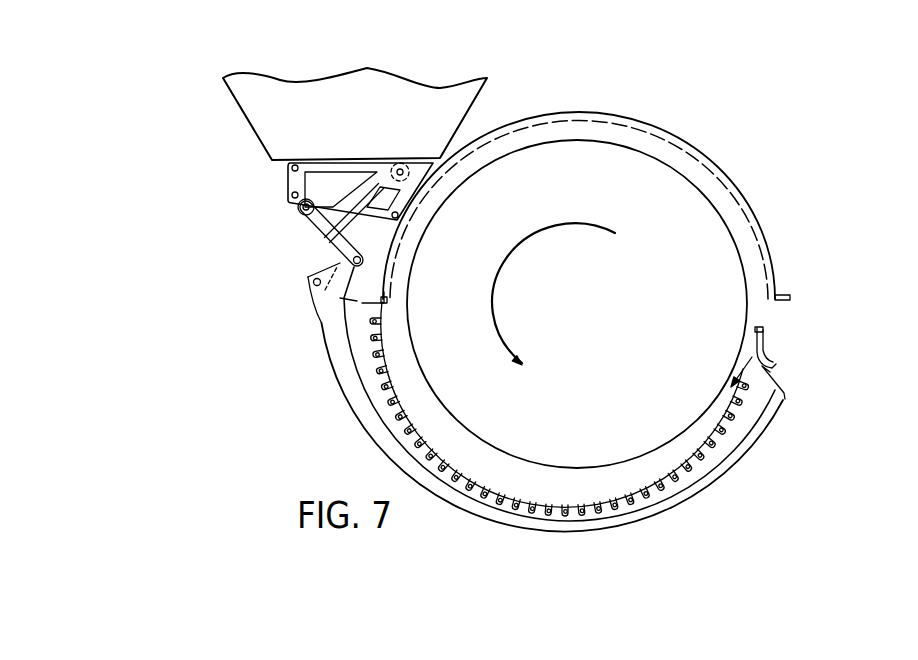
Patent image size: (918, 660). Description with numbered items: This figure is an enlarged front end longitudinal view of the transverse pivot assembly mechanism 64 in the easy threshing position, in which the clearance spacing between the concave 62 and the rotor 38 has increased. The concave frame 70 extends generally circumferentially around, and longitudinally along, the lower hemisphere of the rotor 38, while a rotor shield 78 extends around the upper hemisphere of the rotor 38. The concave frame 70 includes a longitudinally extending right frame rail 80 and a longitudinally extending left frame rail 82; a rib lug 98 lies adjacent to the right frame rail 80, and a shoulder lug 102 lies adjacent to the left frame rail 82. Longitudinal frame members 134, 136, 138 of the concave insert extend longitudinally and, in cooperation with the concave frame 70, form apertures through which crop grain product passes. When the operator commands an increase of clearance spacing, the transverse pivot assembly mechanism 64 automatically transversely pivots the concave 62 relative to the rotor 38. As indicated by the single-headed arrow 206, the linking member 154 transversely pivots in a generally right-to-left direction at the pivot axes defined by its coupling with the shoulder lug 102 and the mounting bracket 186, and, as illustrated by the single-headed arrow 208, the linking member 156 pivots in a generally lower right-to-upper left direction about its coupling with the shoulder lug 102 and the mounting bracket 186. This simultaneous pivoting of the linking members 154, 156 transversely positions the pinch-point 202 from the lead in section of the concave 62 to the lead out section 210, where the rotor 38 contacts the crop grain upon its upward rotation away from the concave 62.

The mounting bracket 186 is at (352, 160).
The rotor shield 78 is at (605, 115).
The rotor 38 is at (670, 166).
The lead out section 210 is at (777, 297).
The right frame rail 80 is at (776, 350).
The rib lug 98 is at (778, 386).
The pinch-point 202 is at (712, 388).
The concave frame 70 is at (376, 442).
The concave 62 is at (509, 551).
The transverse pivot assembly mechanism 64 is at (205, 218).
The single-headed arrow 206 is at (312, 232).
The single-headed arrow 208 is at (318, 259).
The linking member 154 is at (302, 243).
The linking member 156 is at (366, 222).
The shoulder lug 102 is at (312, 305).
The left frame rail 82 is at (340, 300).
The longitudinal frame member 134 is at (343, 310).
The longitudinal frame member 136 is at (363, 330).
The longitudinal frame member 138 is at (377, 347).